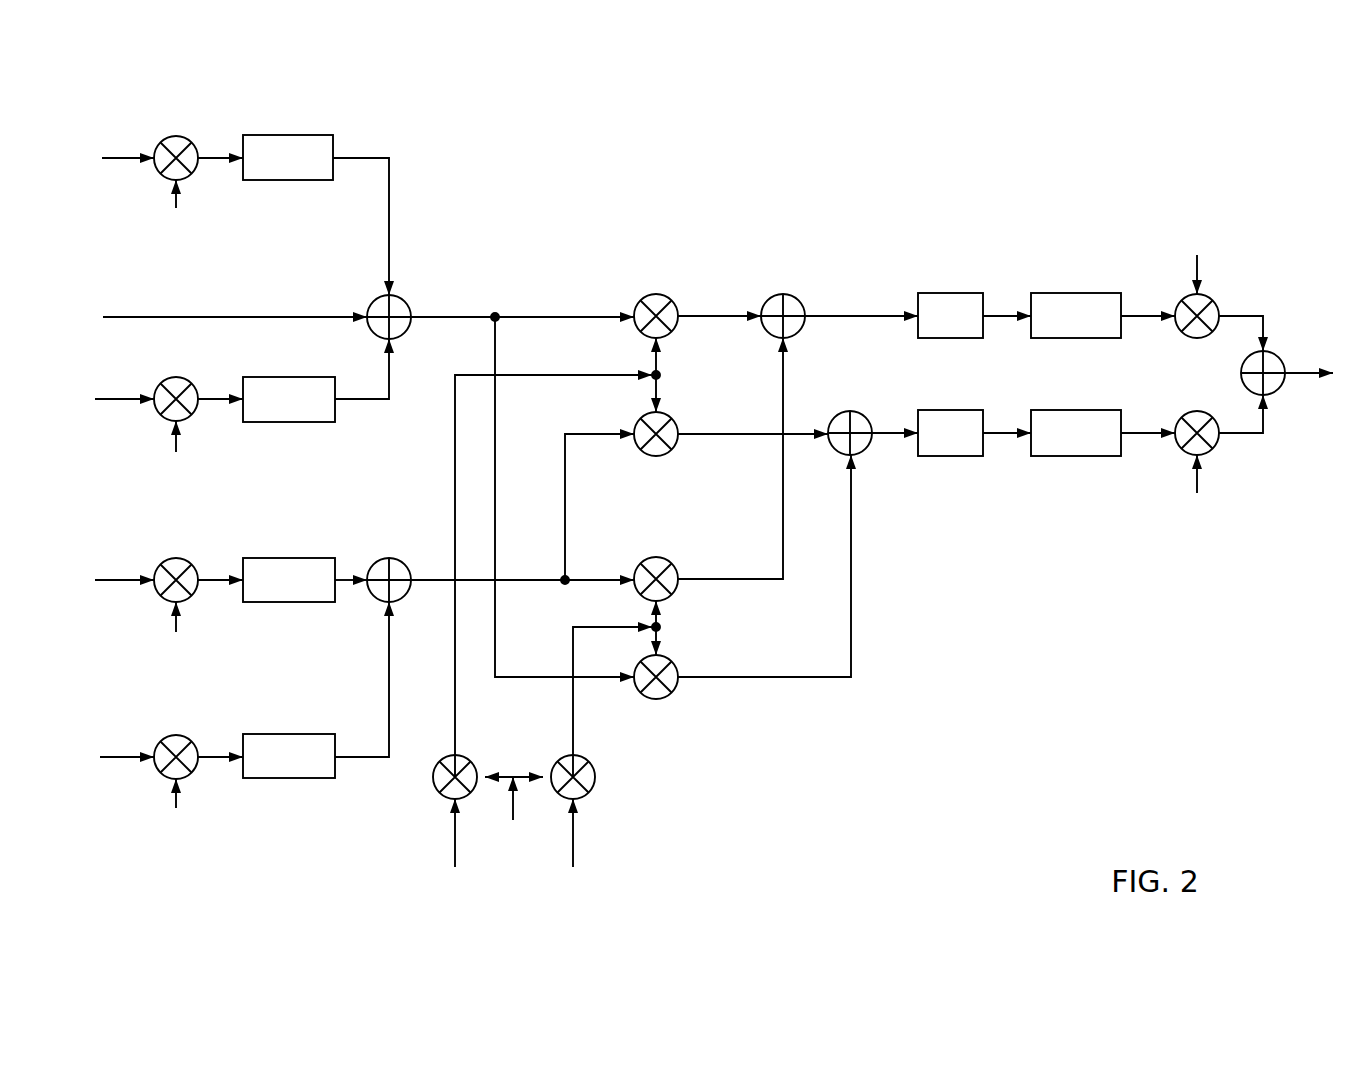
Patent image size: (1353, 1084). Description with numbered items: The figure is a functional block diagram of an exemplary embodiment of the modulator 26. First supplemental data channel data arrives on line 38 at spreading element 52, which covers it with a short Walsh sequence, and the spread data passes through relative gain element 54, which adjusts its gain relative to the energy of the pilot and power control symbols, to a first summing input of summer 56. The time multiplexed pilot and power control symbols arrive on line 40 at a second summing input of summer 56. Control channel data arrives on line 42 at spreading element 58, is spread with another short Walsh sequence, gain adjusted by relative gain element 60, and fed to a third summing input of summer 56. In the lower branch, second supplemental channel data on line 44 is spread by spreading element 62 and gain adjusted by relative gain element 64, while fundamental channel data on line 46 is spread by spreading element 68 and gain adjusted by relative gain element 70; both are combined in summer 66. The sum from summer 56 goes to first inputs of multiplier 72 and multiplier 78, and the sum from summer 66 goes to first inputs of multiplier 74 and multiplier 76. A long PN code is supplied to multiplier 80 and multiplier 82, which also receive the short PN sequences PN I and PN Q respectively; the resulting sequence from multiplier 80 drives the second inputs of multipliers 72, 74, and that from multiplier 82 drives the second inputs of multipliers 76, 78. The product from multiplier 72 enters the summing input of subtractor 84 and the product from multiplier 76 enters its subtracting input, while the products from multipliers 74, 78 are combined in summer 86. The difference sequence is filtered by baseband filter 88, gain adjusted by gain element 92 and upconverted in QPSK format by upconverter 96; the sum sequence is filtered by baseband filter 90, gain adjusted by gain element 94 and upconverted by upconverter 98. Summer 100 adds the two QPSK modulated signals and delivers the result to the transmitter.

The modulator 26 is at (913, 201).
The line 38 is at (131, 156).
The line 40 is at (212, 315).
The line 42 is at (131, 398).
The line 44 is at (131, 579).
The line 46 is at (131, 756).
The spreading element 52 is at (181, 136).
The relative gain element 54 is at (306, 135).
The summer 56 is at (405, 302).
The spreading element 58 is at (181, 377).
The relative gain element 60 is at (306, 377).
The spreading element 62 is at (181, 558).
The relative gain element 64 is at (306, 558).
The summer 66 is at (392, 558).
The spreading element 68 is at (181, 735).
The relative gain element 70 is at (306, 734).
The multiplier 72 is at (653, 294).
The multiplier 74 is at (655, 457).
The multiplier 76 is at (655, 557).
The multiplier 78 is at (655, 699).
The multiplier 80 is at (440, 796).
The multiplier 82 is at (589, 796).
The subtractor 84 is at (781, 294).
The summer 86 is at (848, 411).
The baseband filter 88 is at (945, 293).
The baseband filter 90 is at (945, 410).
The gain element 92 is at (1072, 293).
The gain element 94 is at (1072, 410).
The upconverter 96 is at (1212, 297).
The upconverter 98 is at (1213, 451).
The summer 100 is at (1278, 353).